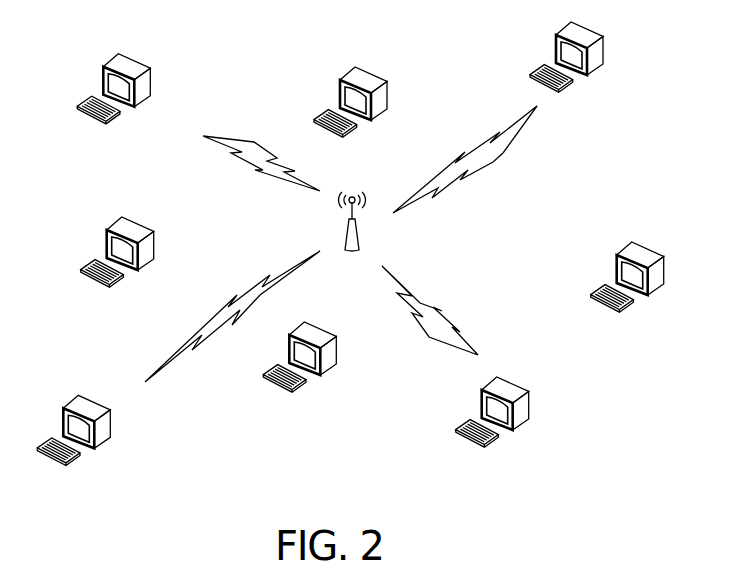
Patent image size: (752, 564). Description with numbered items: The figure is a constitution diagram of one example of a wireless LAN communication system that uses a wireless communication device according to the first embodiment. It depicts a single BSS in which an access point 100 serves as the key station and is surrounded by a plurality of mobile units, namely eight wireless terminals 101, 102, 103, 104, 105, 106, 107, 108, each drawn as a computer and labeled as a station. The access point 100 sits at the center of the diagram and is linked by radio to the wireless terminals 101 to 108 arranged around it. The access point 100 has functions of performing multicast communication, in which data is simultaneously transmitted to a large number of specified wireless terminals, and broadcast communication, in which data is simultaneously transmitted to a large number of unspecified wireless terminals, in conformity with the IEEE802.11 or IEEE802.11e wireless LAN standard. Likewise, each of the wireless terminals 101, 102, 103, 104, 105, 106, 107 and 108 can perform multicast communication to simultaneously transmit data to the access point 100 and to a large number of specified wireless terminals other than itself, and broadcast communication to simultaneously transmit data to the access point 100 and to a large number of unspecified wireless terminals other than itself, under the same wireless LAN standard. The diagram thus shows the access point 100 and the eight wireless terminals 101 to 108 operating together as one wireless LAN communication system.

The access point 100 is at (352, 225).
The wireless terminal 101 is at (120, 90).
The wireless terminal 102 is at (357, 103).
The wireless terminal 103 is at (573, 58).
The wireless terminal 104 is at (124, 253).
The wireless terminal 105 is at (634, 278).
The wireless terminal 106 is at (80, 431).
The wireless terminal 107 is at (306, 358).
The wireless terminal 108 is at (499, 413).